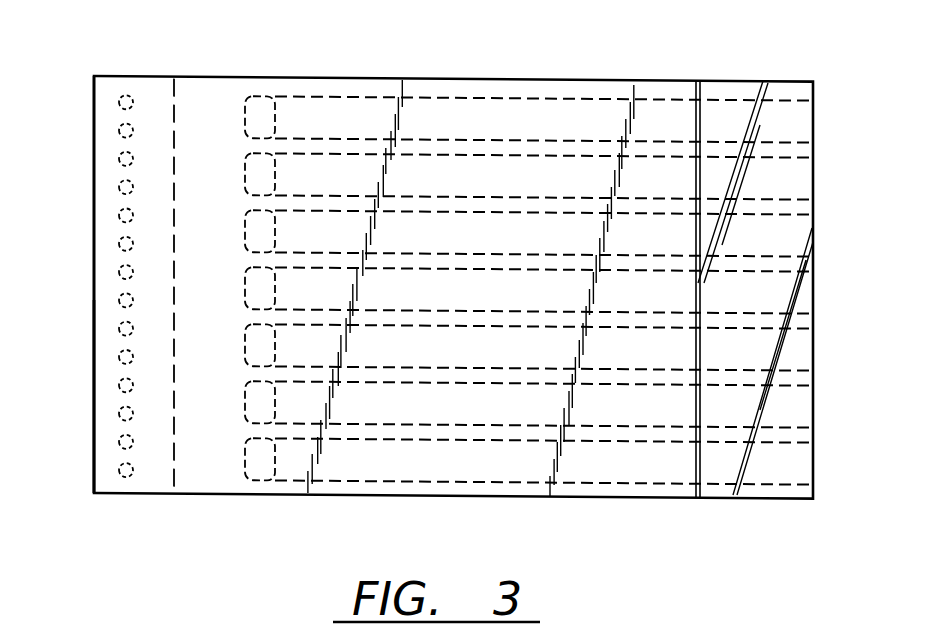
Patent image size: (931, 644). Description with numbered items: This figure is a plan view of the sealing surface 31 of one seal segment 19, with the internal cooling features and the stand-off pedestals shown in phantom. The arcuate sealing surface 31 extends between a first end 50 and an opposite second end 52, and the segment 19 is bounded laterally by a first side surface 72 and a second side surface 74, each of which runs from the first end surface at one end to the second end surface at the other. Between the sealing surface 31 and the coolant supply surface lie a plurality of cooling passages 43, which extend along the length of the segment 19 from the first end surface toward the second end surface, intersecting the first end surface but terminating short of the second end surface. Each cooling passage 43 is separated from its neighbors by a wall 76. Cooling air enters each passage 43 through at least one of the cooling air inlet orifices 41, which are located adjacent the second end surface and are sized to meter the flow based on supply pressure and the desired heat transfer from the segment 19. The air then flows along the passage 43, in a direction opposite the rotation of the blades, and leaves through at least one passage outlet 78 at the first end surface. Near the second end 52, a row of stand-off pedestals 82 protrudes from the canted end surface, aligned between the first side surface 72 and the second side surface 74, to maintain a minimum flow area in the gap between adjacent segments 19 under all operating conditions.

The seal segment 19 is at (88, 212).
The sealing surface 31 is at (228, 273).
The cooling air inlet orifices 41 is at (240, 97).
The cooling passages 43 is at (458, 113).
The first end 50 is at (818, 158).
The second end 52 is at (91, 329).
The first side surface 72 is at (374, 78).
The second side surface 74 is at (673, 497).
The wall 76 is at (538, 268).
The passage outlet 78 is at (815, 293).
The stand-off pedestals 82 is at (120, 157).